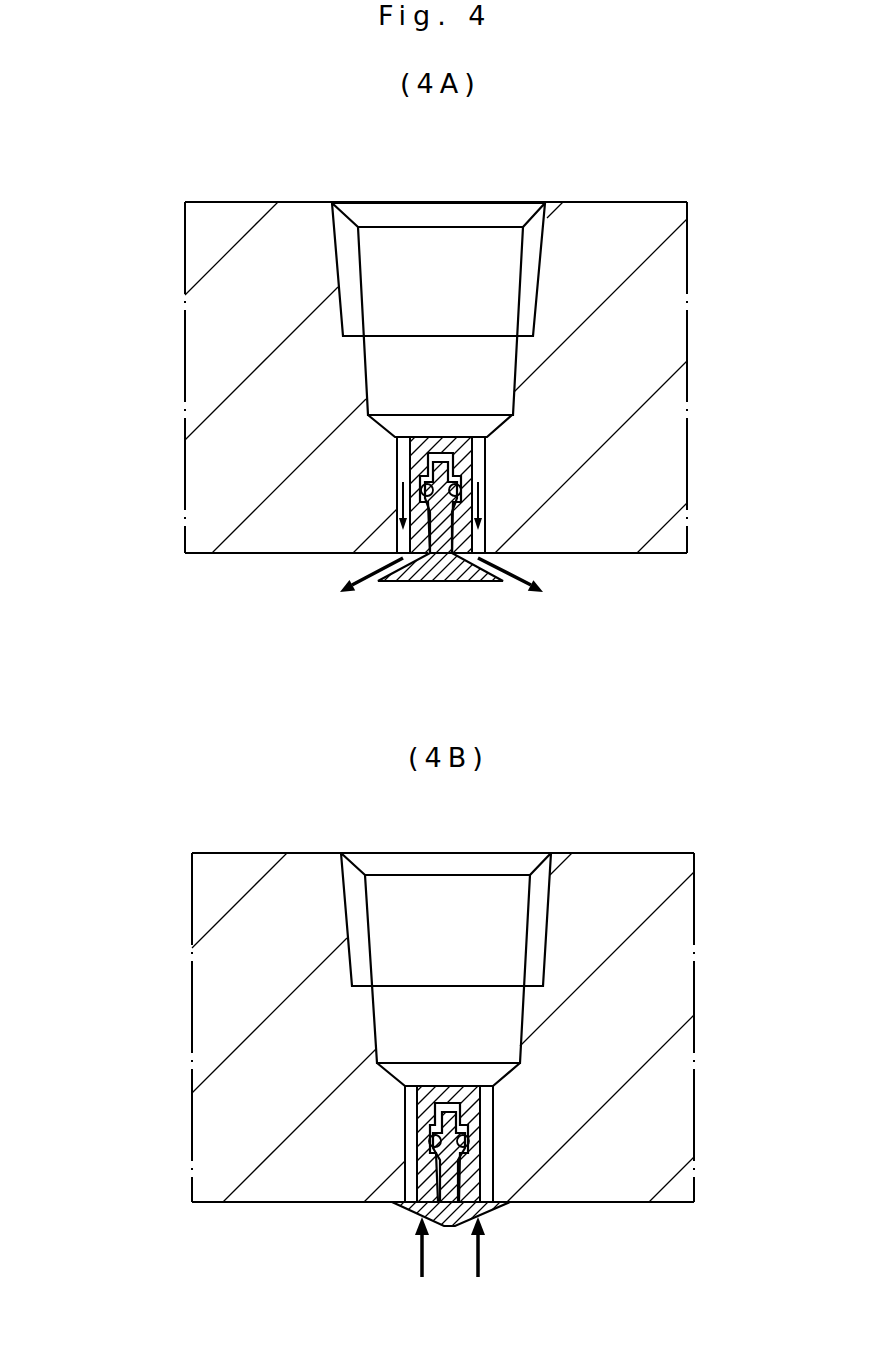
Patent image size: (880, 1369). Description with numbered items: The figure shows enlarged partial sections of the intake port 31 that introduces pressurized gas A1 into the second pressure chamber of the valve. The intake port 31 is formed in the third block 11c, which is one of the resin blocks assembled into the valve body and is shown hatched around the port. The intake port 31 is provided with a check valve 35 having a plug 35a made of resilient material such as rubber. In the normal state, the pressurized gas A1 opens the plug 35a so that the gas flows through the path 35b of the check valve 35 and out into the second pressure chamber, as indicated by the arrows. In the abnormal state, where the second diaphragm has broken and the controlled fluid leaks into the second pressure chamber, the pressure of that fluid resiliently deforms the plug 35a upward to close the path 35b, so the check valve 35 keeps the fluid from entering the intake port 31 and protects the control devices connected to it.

In FIG. 4A, the third block 11c is at (667, 350).
In FIG. 4B, the third block 11c is at (675, 998).
In FIG. 4A, the intake port 31 is at (405, 386).
In FIG. 4B, the intake port 31 is at (413, 1033).
In FIG. 4A, the check valve 35 is at (443, 574).
In FIG. 4B, the check valve 35 is at (462, 1214).
In FIG. 4A, the plug 35a is at (420, 577).
In FIG. 4B, the plug 35a is at (415, 1204).
In FIG. 4A, the path 35b is at (478, 471).
In FIG. 4B, the path 35b is at (487, 1122).
In FIG. 4A, the pressurized gas A1 is at (517, 567).